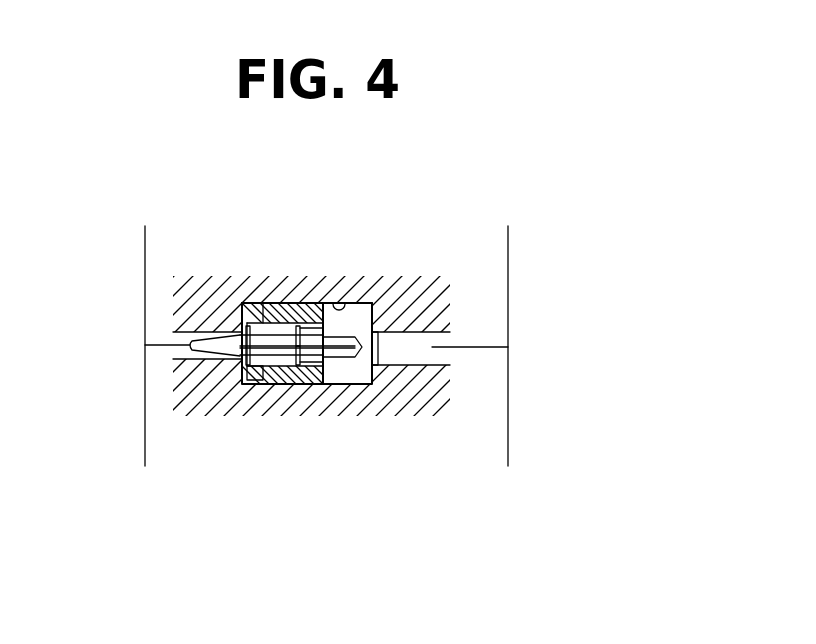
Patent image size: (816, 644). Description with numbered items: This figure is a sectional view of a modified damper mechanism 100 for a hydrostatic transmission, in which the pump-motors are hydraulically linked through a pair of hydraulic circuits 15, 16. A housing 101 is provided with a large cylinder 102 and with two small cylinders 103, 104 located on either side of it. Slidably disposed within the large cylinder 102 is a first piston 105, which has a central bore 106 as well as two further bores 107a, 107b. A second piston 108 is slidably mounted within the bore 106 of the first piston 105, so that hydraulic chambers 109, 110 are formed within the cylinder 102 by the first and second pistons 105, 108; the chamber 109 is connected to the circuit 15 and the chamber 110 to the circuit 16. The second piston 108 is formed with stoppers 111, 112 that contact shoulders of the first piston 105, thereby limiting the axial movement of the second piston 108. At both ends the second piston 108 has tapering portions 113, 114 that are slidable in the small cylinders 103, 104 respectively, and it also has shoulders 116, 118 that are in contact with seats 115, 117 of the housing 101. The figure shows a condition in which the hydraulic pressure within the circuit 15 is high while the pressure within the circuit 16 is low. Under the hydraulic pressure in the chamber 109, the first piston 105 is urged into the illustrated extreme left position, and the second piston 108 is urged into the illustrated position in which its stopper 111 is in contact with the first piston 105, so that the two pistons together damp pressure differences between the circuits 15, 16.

The hydraulic circuit 15 is at (510, 300).
The hydraulic circuit 16 is at (143, 300).
The damper mechanism 100 is at (333, 226).
The housing 101 is at (430, 305).
The large cylinder 102 is at (353, 308).
The small cylinder 103 is at (432, 372).
The small cylinder 104 is at (176, 336).
The first piston 105 is at (282, 303).
The bore 106 is at (298, 372).
The bore 107a is at (312, 325).
The bore 107b is at (250, 366).
The second piston 108 is at (287, 375).
The hydraulic chamber 109 is at (358, 308).
The hydraulic chamber 110 is at (263, 303).
The stopper 111 is at (317, 372).
The stopper 112 is at (260, 372).
The tapering portion 113 is at (327, 365).
The tapering portion 114 is at (195, 356).
The seat 115 is at (246, 366).
The shoulder 116 is at (218, 330).
The seat 117 is at (387, 368).
The shoulder 118 is at (337, 372).